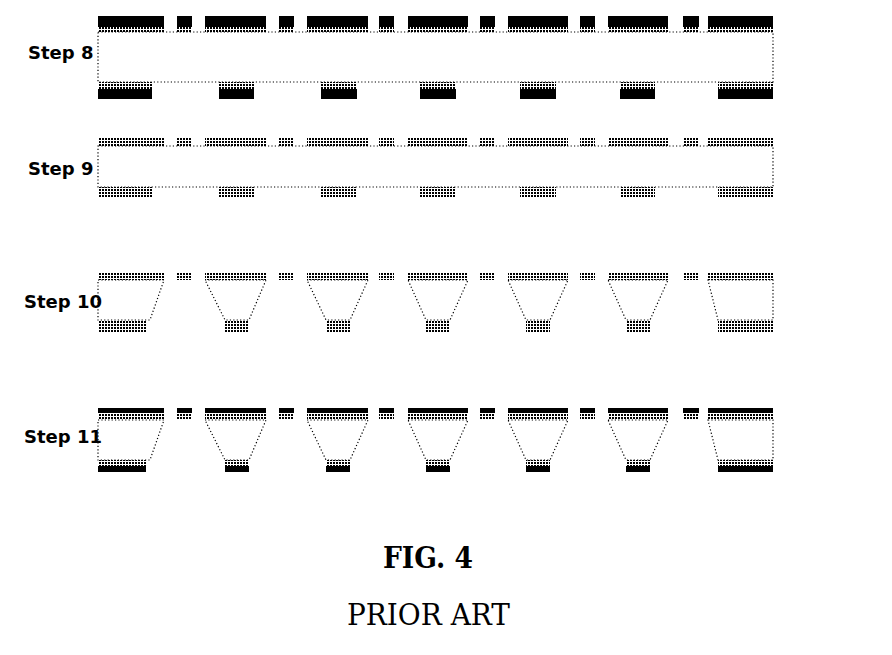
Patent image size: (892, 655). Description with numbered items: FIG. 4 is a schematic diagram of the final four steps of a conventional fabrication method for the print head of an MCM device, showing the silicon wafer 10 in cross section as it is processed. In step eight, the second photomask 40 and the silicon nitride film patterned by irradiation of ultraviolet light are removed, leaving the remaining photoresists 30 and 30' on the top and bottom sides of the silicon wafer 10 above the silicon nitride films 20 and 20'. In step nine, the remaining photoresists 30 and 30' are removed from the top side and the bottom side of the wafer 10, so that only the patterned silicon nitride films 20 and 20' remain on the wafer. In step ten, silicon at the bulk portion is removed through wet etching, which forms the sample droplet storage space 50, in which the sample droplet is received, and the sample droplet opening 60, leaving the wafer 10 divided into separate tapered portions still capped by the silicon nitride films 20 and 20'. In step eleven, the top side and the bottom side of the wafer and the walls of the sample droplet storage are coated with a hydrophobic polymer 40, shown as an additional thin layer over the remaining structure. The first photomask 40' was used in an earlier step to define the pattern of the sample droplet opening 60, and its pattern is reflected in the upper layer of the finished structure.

The silicon wafer 10 is at (768, 53).
The silicon nitride film 20 is at (459, 339).
The silicon nitride film 20' is at (462, 288).
The photoresist 30 is at (459, 96).
The photoresist 30' is at (461, 31).
The hydrophobic polymer 40 is at (440, 486).
The first photomask 40' is at (460, 400).
The sample droplet storage space 50 is at (690, 313).
The sample droplet opening 60 is at (703, 275).